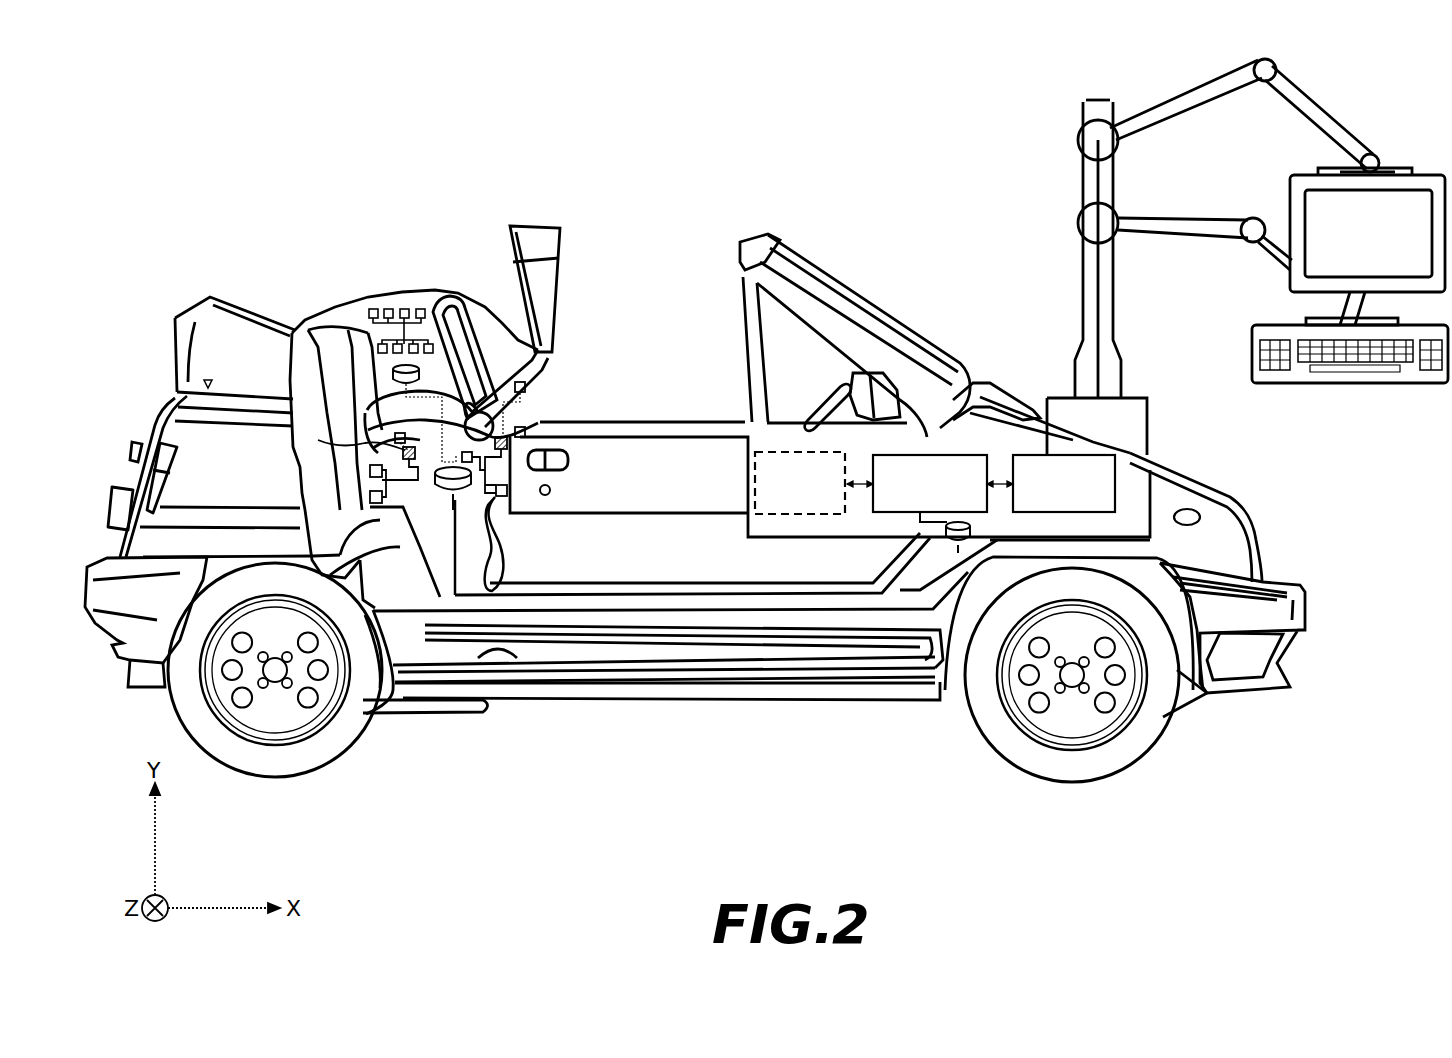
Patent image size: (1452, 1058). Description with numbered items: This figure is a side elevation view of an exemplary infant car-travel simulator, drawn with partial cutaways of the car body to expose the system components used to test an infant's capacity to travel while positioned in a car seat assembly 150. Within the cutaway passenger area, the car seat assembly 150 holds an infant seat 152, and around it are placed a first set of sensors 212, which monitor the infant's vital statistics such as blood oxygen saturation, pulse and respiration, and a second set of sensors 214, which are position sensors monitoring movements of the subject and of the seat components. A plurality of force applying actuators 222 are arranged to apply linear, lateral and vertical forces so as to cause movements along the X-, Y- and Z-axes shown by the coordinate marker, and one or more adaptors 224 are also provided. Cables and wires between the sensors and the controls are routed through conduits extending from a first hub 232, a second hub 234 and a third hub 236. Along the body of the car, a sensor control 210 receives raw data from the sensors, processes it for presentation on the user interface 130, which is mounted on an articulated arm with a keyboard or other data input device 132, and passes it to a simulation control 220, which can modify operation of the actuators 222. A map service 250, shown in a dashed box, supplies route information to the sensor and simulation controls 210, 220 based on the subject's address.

The user interface 130 is at (1290, 166).
The keyboard or other data input device 132 is at (1262, 318).
The car seat assembly 150 is at (378, 258).
The infant seat 152 is at (506, 376).
The sensor control 210 is at (1120, 482).
The first set of sensors 212 is at (412, 306).
The second set of sensors 214 is at (370, 335).
The simulation control 220 is at (968, 455).
The force applying actuators 222 is at (525, 386).
The adaptors 224 is at (318, 440).
The first hub 232 is at (393, 374).
The second hub 234 is at (503, 548).
The third hub 236 is at (946, 530).
The map service 250 is at (752, 492).